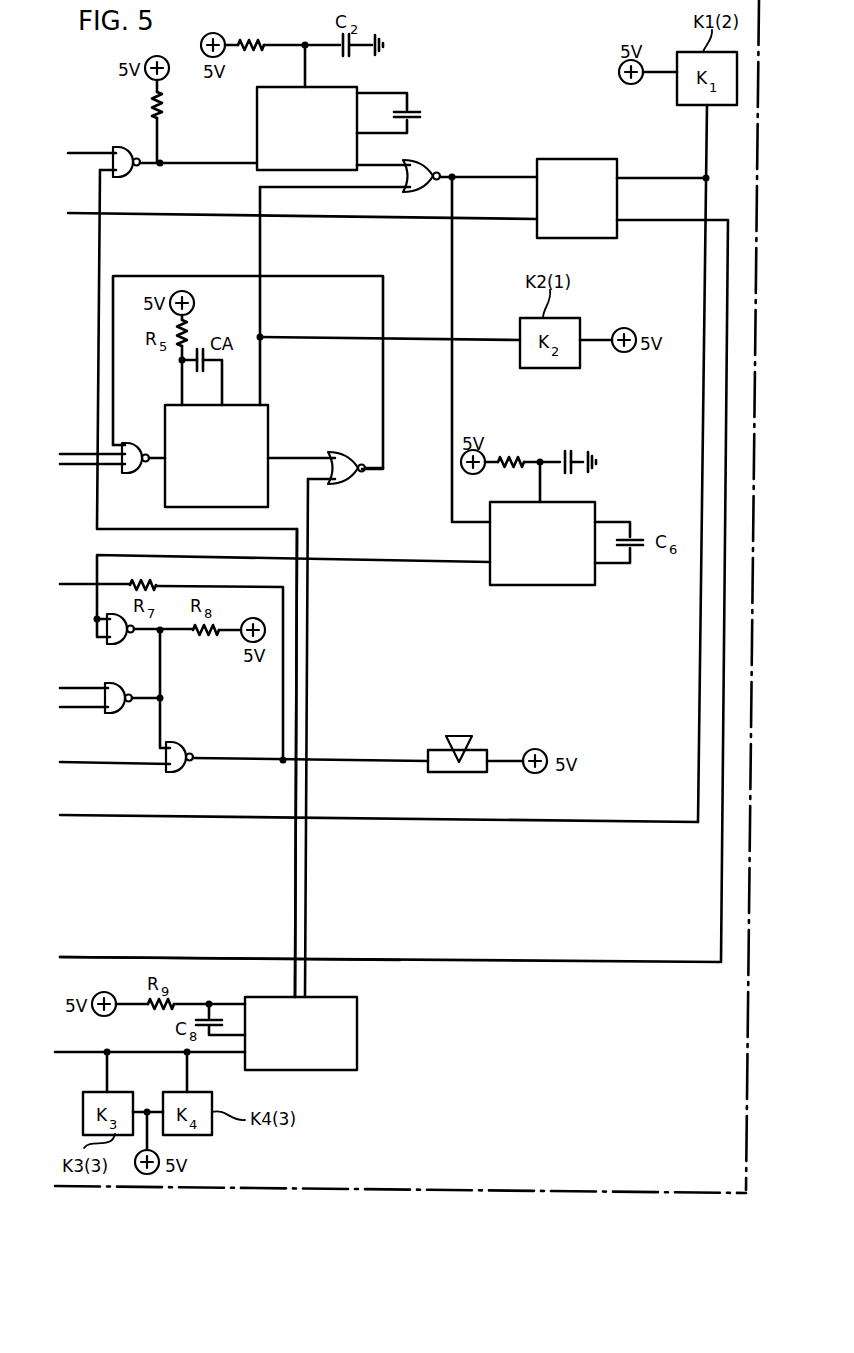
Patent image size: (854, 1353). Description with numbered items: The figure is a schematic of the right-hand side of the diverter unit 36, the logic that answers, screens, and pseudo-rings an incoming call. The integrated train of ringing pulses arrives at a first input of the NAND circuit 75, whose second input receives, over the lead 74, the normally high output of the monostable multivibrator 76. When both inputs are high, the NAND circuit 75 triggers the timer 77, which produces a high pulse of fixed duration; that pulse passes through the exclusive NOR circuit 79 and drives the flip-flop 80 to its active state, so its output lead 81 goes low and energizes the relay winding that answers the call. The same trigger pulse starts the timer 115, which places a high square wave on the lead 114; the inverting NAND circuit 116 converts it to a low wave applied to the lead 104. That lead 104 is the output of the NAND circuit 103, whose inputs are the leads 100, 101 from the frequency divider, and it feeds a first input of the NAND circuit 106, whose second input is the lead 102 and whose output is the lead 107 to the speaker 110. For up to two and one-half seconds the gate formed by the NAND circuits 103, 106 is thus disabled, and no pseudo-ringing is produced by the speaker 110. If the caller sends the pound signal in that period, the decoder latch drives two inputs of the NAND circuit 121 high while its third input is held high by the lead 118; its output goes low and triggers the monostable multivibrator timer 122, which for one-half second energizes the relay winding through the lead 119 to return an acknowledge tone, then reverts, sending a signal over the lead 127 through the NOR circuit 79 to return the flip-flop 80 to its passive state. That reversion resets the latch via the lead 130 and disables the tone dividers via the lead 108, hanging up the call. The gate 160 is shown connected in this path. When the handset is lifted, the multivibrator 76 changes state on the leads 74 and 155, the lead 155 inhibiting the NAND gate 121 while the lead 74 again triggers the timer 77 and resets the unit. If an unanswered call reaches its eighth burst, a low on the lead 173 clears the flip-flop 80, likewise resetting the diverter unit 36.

The diverter unit 36 is at (407, 596).
The lead 74 is at (293, 888).
The NAND circuit 75 is at (104, 152).
The monostable multivibrator 76 is at (357, 1031).
The timer 77 is at (257, 129).
The exclusive NOR circuit 79 is at (351, 167).
The flip-flop 80 is at (572, 160).
The output lead 81 is at (657, 178).
The output lead 100 is at (84, 676).
The output lead 101 is at (84, 719).
The output lead 102 is at (115, 751).
The NAND circuit 103 is at (118, 711).
The output lead 104 is at (162, 726).
The NAND circuit 106 is at (178, 771).
The lead 107 is at (245, 761).
The lead 108 is at (377, 809).
The speaker 110 is at (457, 744).
The lead 114 is at (400, 565).
The timer 115 is at (545, 585).
The inverting NAND circuit 116 is at (116, 643).
The lead 118 is at (366, 277).
The lead 119 is at (413, 342).
The NAND circuit 121 is at (104, 472).
The monostable multivibrator timer 122 is at (268, 420).
The lead 127 is at (260, 242).
The lead 130 is at (168, 215).
The lead 155 is at (307, 870).
The NOR gate 160 is at (316, 458).
The output lead 173 is at (228, 949).